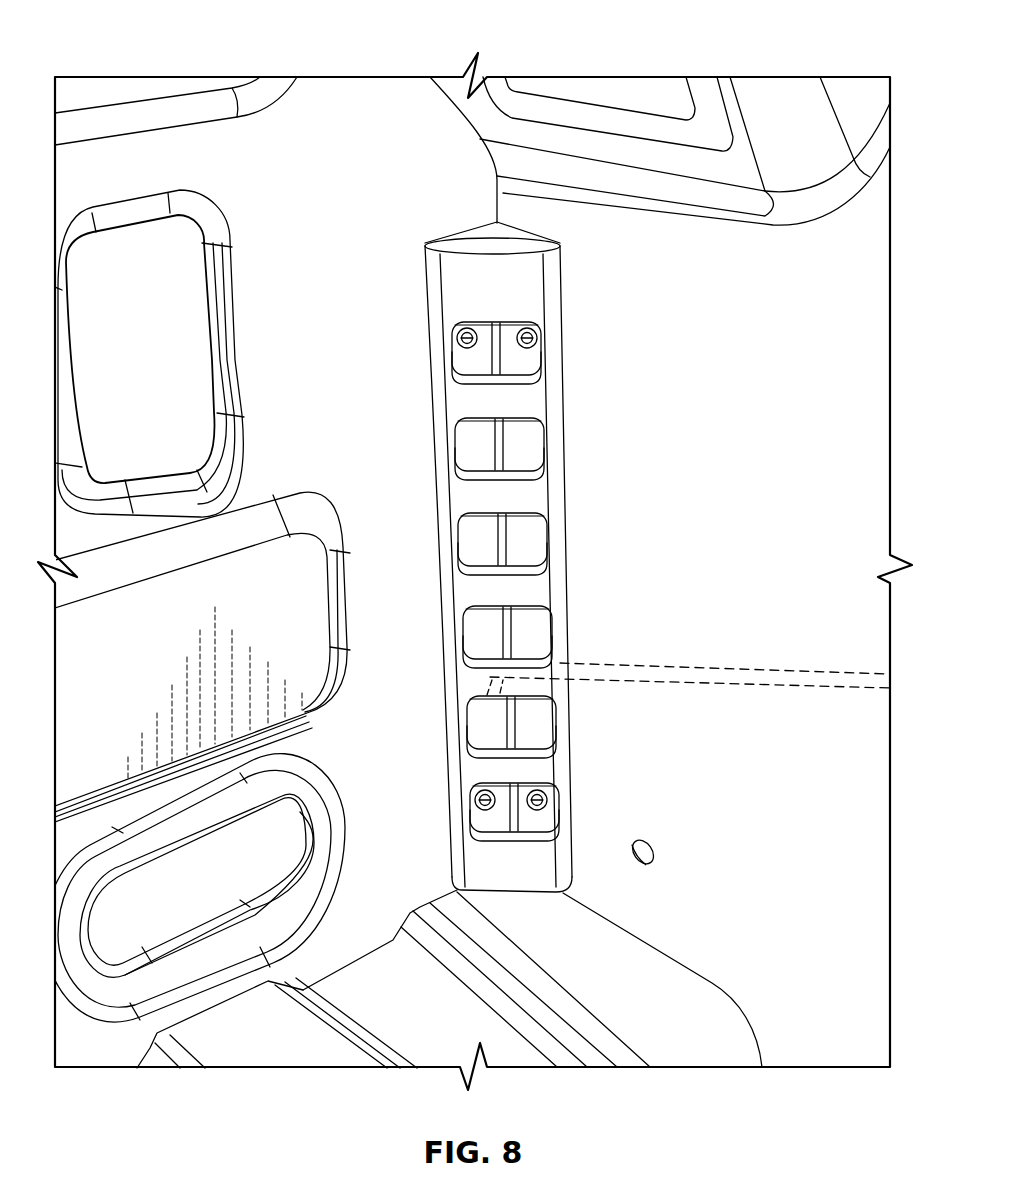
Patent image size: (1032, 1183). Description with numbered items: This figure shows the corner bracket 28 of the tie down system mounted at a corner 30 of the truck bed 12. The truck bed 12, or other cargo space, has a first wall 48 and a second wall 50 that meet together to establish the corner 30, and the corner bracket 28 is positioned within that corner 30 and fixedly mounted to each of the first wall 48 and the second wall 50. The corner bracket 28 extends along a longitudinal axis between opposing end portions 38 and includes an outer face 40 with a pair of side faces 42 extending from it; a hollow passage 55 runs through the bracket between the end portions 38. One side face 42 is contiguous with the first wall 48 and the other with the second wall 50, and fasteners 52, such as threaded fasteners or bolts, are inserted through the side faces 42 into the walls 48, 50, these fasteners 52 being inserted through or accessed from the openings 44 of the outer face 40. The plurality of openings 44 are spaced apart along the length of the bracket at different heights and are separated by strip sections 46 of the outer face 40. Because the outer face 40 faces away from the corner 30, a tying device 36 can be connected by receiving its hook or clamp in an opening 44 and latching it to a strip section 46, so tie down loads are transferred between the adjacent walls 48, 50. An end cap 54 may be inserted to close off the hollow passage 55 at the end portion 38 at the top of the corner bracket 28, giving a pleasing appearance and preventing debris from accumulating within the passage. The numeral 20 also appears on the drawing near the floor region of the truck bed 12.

The truck bed 12 is at (237, 150).
The floor 20 is at (412, 1041).
The corner bracket 28 is at (572, 454).
The corner 30 is at (535, 182).
The tying device 36 is at (727, 672).
The end portions 38 is at (396, 274).
The outer face 40 is at (462, 285).
The side faces 42 is at (467, 447).
The openings 44 is at (508, 367).
The strip sections 46 is at (472, 400).
The first wall 48 is at (274, 345).
The second wall 50 is at (729, 405).
The fasteners 52 is at (540, 345).
The end cap 54 is at (510, 238).
The hollow passage 55 is at (537, 900).